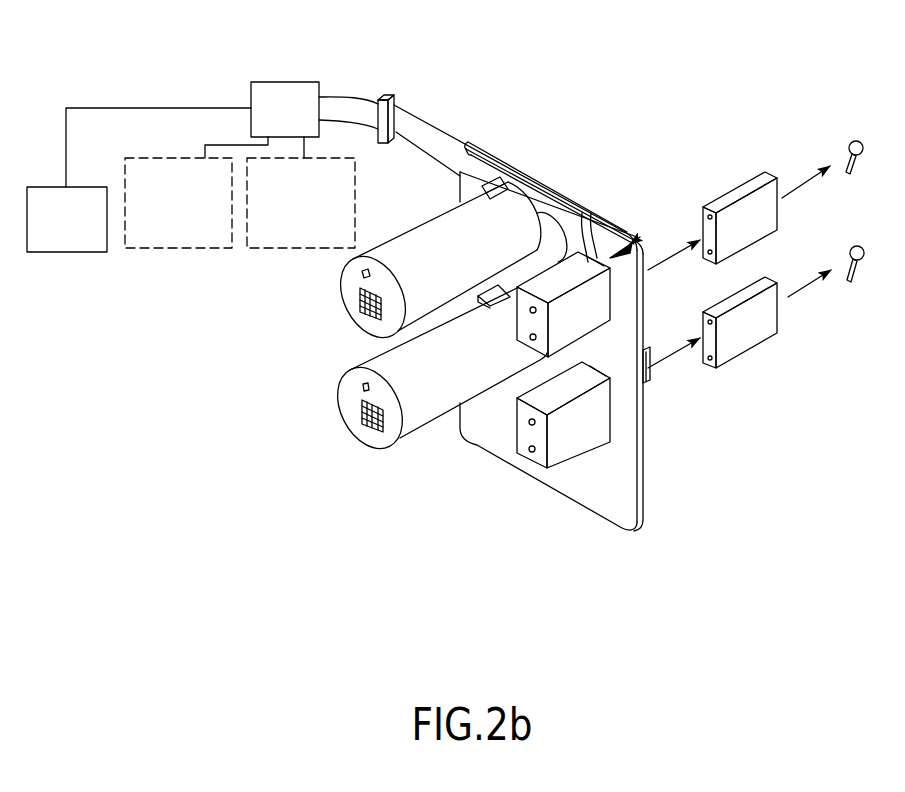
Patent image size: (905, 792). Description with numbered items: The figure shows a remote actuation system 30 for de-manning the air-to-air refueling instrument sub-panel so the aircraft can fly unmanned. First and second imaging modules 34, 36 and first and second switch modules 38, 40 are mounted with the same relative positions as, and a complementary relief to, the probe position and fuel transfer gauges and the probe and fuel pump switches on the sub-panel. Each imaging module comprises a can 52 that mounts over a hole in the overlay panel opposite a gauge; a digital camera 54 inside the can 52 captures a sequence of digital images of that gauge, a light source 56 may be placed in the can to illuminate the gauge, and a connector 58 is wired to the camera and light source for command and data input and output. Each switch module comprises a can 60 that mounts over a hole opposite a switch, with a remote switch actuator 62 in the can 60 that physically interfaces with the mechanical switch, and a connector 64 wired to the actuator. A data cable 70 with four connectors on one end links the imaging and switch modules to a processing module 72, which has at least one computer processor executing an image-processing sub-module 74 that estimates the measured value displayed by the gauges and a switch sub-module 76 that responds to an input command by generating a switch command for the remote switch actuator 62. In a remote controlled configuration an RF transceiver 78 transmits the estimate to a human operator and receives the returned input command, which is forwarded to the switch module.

The remote actuation system 30 is at (705, 111).
The first imaging module 34 is at (420, 195).
The second imaging module 36 is at (420, 428).
The first switch module 38 is at (642, 233).
The second switch module 40 is at (603, 423).
The can 52 is at (452, 270).
The digital camera 54 is at (361, 311).
The light source 56 is at (363, 273).
The connector 58 is at (520, 168).
The can 60 is at (564, 325).
The remote switch actuator 62 is at (758, 170).
The connector 64 is at (592, 214).
The data cable 70 is at (455, 140).
The processing module 72 is at (305, 82).
The image-processing sub-module 74 is at (192, 160).
The switch sub-module 76 is at (255, 250).
The RF transceiver 78 is at (55, 253).